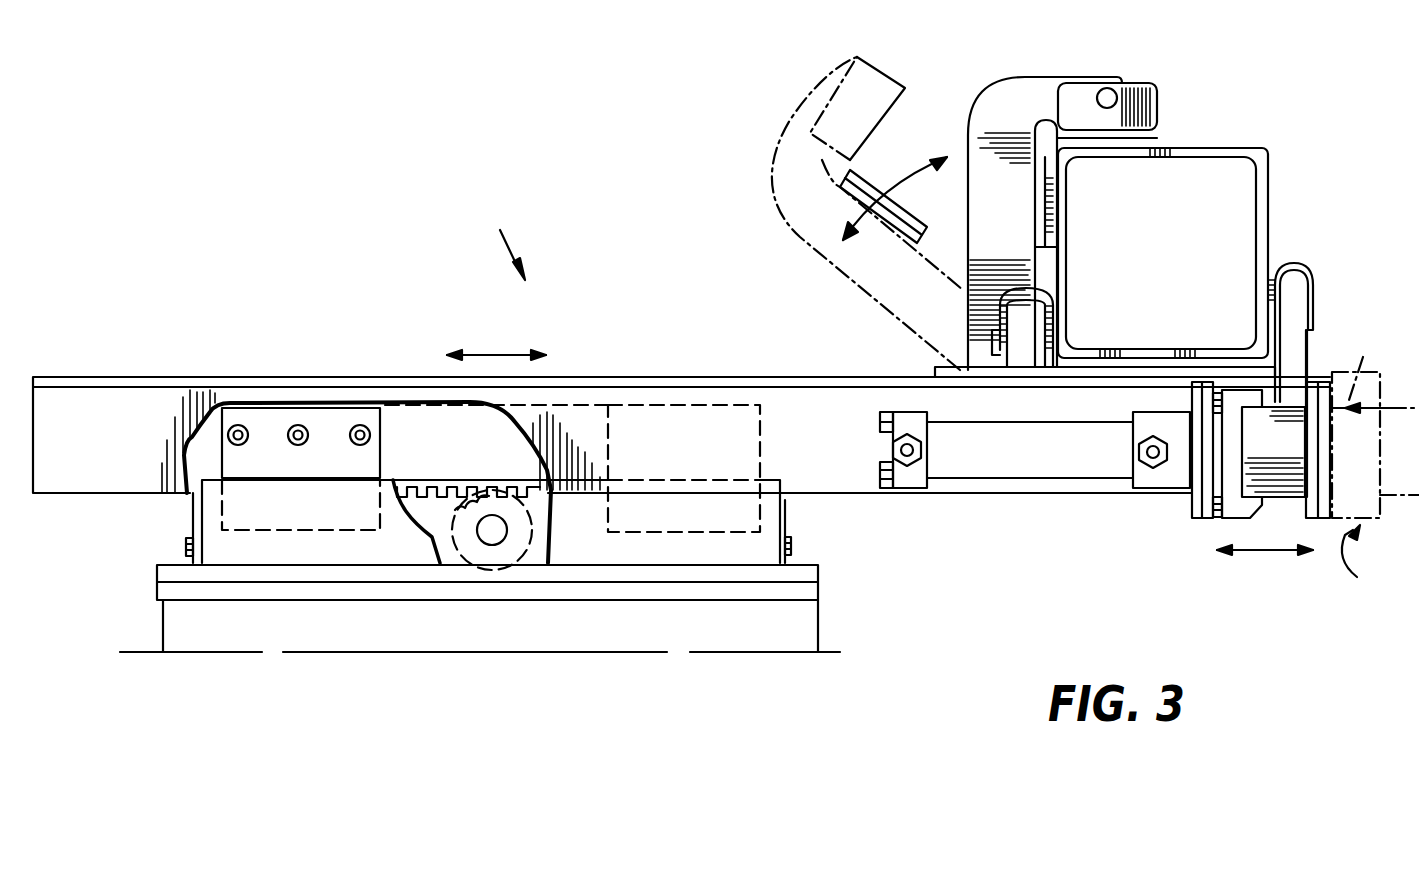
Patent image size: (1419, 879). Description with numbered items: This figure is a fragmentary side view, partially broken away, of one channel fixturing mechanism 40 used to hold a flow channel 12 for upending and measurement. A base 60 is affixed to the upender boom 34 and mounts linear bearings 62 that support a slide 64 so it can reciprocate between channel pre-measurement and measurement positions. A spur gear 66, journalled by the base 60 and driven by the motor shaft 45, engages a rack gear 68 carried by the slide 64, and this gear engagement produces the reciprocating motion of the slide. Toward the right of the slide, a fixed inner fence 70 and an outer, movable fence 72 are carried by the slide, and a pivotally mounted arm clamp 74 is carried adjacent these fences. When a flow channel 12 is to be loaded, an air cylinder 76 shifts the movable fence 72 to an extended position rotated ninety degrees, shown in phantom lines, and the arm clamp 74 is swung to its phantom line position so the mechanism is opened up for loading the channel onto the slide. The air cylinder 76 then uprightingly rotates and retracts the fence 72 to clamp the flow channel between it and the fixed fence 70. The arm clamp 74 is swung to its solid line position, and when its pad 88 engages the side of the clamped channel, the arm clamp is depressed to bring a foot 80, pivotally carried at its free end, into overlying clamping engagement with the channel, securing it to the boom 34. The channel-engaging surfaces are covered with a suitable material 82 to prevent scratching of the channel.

The flow channel 12 is at (1272, 180).
The upender boom 34 is at (808, 572).
The fixturing mechanism 40 is at (491, 250).
The shaft 45 is at (502, 532).
The base 60 is at (717, 552).
The linear bearings 62 is at (272, 430).
The slide 64 is at (576, 395).
The spur gear 66 is at (485, 552).
The rack gear 68 is at (447, 490).
The fixed inner fence 70 is at (1027, 327).
The outer movable fence 72 is at (1366, 352).
The arm clamp 74 is at (1000, 97).
The air cylinder 76 is at (1043, 457).
The foot 80 is at (1138, 85).
The material 82 is at (1158, 140).
The pad 88 is at (1041, 228).